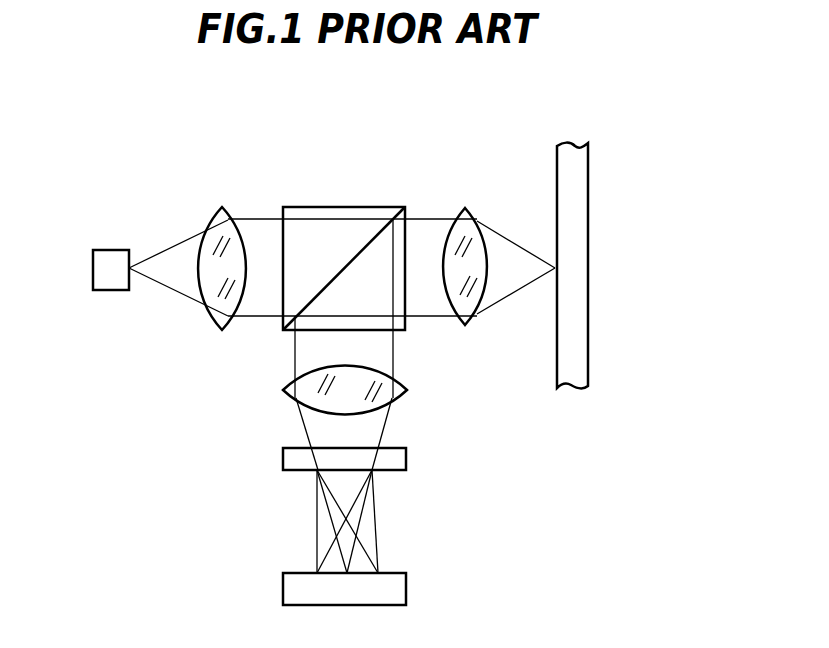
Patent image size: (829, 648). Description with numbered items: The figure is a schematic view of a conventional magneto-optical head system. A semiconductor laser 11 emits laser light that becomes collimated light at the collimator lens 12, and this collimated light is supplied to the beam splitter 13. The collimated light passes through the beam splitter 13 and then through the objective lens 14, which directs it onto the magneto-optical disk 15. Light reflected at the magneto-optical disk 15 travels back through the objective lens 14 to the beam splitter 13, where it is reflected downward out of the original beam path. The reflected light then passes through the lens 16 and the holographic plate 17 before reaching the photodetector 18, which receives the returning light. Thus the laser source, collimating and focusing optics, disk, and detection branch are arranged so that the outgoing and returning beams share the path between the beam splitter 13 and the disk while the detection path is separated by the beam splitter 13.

The semiconductor laser 11 is at (105, 282).
The collimator lens 12 is at (212, 220).
The beam splitter 13 is at (323, 208).
The objective lens 14 is at (467, 210).
The magneto-optical disk 15 is at (578, 202).
The lens 16 is at (407, 389).
The holographic plate 17 is at (407, 455).
The photodetector 18 is at (407, 583).